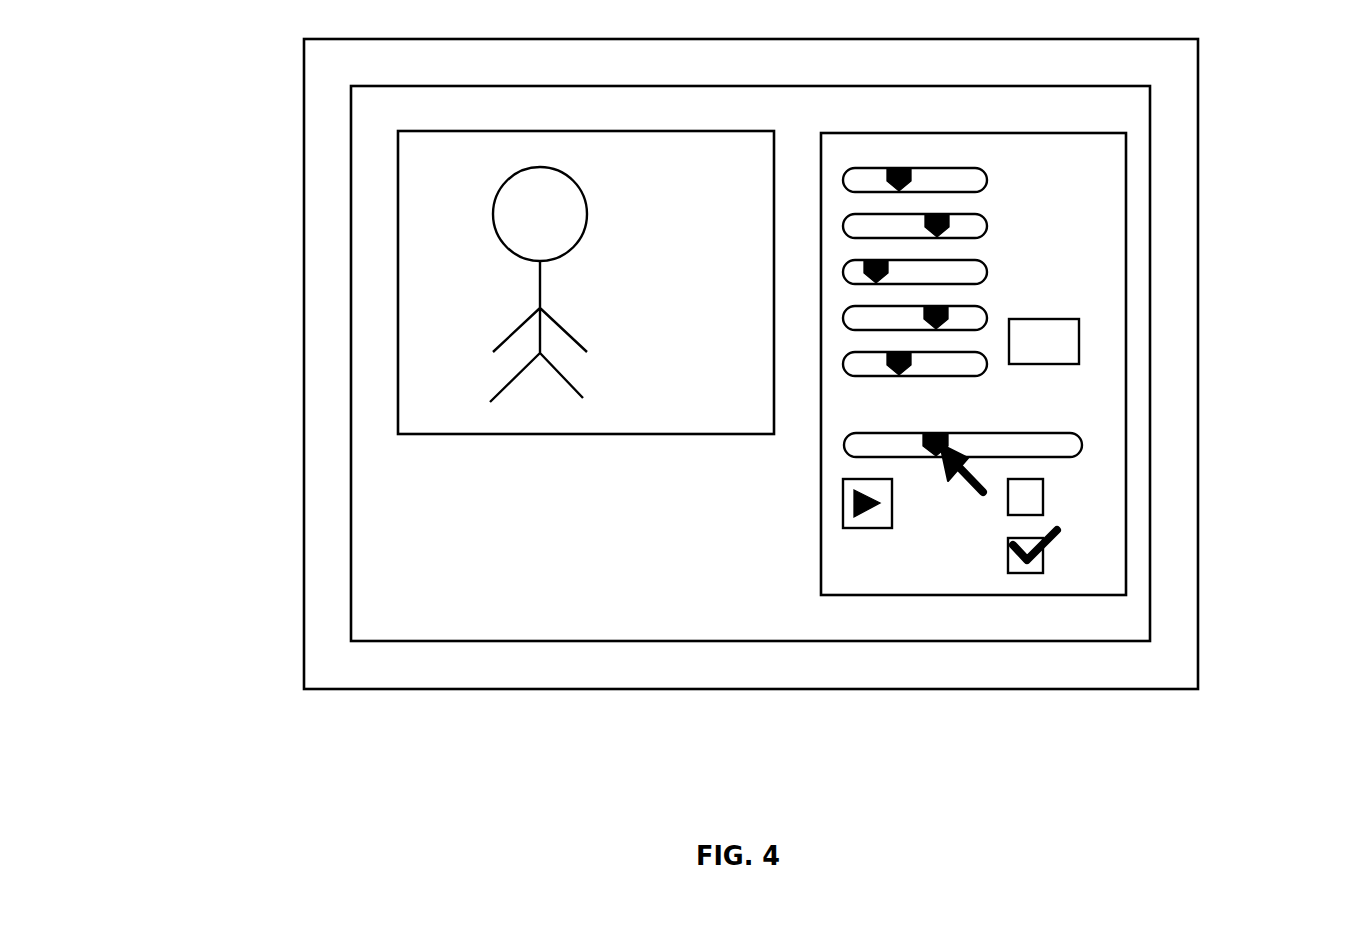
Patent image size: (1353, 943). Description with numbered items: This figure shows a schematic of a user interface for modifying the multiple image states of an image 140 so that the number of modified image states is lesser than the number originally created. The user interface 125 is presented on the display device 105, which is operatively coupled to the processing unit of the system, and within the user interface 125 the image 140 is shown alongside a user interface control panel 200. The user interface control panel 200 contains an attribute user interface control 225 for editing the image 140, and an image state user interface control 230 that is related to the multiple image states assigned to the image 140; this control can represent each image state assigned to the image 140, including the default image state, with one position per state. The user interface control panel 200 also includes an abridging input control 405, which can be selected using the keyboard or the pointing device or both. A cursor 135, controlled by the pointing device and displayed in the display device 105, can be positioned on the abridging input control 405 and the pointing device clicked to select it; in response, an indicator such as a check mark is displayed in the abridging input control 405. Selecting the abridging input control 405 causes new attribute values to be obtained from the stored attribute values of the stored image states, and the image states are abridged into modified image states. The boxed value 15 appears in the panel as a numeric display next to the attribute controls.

The display device 105 is at (304, 84).
The user interface 125 is at (351, 180).
The image 140 is at (398, 277).
The user interface control panel 200 is at (1127, 571).
The attribute user interface control 225 is at (987, 366).
The image state user interface control 230 is at (1082, 445).
The cursor 135 is at (1057, 537).
The abridging input control 405 is at (985, 492).
The value display 15 is at (1044, 341).